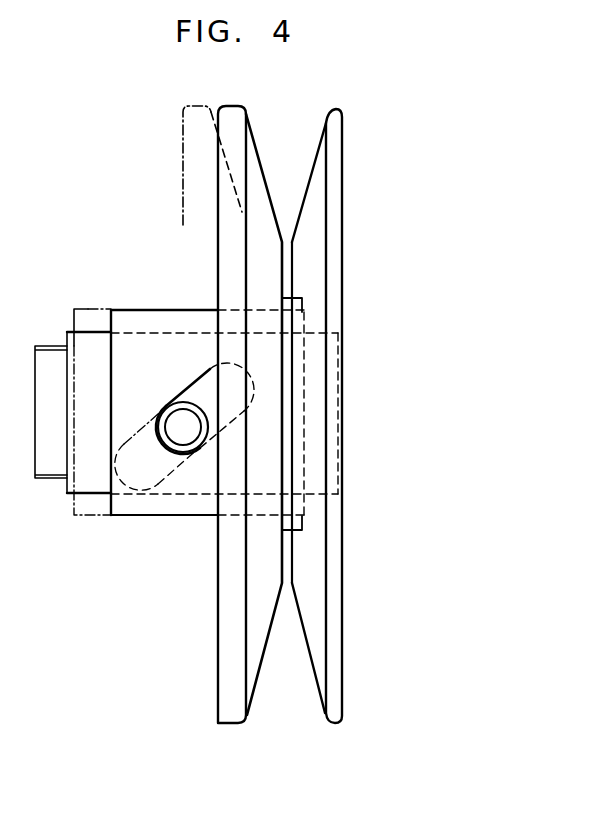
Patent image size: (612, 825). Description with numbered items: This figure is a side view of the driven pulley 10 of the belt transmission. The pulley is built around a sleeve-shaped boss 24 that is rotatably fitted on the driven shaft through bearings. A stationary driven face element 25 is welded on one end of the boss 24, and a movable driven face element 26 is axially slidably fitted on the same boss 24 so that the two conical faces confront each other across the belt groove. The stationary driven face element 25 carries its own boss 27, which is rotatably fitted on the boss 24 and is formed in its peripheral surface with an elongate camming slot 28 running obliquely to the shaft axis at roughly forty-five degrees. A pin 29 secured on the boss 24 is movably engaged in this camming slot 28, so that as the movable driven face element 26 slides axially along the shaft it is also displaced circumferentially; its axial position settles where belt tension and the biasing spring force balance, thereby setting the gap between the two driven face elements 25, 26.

The driven pulley 10 is at (287, 179).
The sleeve-shaped boss 24 is at (90, 330).
The stationary driven face element 25 is at (328, 713).
The movable driven face element 26 is at (233, 717).
The boss 27 is at (143, 308).
The camming slot 28 is at (148, 454).
The pin 29 is at (178, 437).